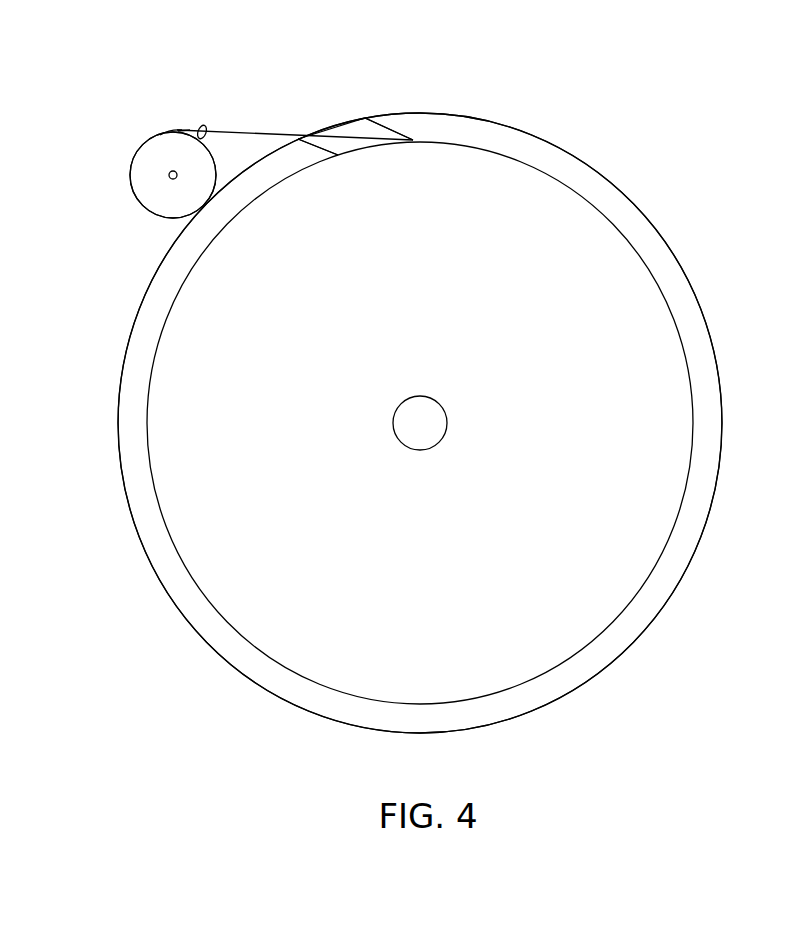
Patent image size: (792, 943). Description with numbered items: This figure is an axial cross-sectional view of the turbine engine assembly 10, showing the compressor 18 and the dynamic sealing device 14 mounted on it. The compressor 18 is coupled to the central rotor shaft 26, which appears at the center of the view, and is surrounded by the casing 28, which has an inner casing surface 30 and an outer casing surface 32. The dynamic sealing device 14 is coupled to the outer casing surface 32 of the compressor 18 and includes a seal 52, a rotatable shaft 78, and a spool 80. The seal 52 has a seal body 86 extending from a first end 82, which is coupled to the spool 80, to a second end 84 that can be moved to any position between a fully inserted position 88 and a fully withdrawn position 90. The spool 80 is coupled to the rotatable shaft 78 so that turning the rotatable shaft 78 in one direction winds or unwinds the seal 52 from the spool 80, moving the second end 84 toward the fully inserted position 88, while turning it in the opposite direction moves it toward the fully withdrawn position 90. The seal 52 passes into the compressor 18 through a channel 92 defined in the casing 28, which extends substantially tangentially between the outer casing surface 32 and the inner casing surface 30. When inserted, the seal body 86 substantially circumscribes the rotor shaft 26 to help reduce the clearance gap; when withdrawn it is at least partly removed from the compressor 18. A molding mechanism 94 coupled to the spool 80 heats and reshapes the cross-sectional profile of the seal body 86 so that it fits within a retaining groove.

The turbine engine assembly 10 is at (580, 108).
The dynamic sealing device 14 is at (107, 99).
The compressor 18 is at (621, 156).
The central rotor shaft 26 is at (448, 425).
The casing 28 is at (708, 372).
The inner casing surface 30 is at (712, 318).
The outer casing surface 32 is at (697, 428).
The seal 52 is at (350, 138).
The rotatable shaft 78 is at (175, 183).
The spool 80 is at (133, 193).
The first end 82 is at (178, 130).
The second end 84 is at (411, 142).
The seal body 86 is at (248, 133).
The fully inserted position 88 is at (417, 143).
The fully withdrawn position 90 is at (181, 129).
The channel 92 is at (301, 141).
The molding mechanism 94 is at (207, 126).